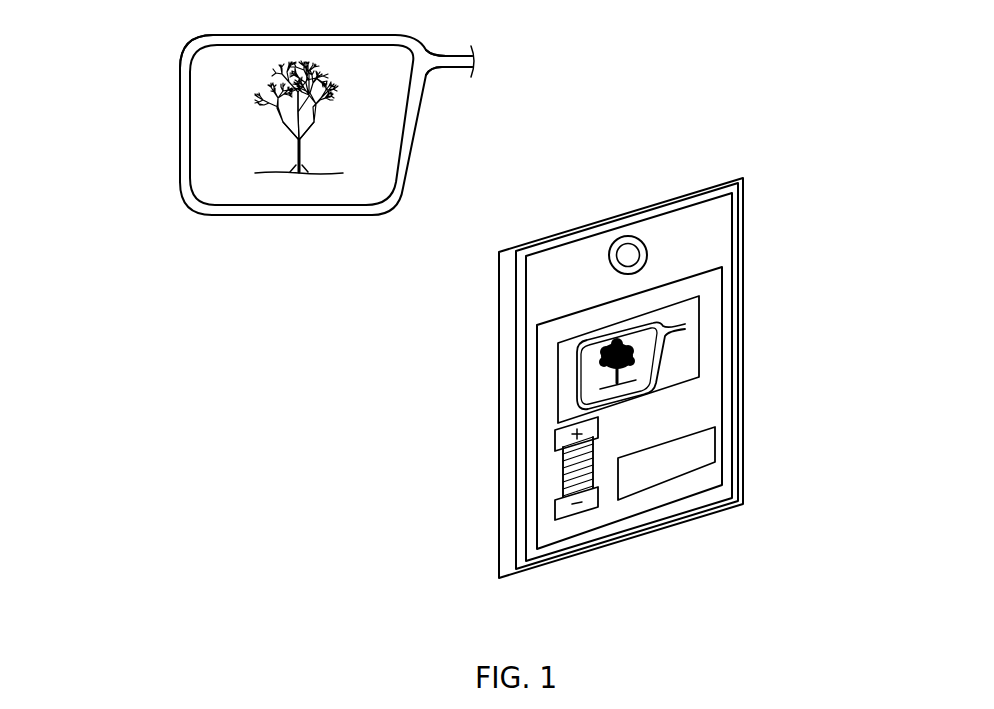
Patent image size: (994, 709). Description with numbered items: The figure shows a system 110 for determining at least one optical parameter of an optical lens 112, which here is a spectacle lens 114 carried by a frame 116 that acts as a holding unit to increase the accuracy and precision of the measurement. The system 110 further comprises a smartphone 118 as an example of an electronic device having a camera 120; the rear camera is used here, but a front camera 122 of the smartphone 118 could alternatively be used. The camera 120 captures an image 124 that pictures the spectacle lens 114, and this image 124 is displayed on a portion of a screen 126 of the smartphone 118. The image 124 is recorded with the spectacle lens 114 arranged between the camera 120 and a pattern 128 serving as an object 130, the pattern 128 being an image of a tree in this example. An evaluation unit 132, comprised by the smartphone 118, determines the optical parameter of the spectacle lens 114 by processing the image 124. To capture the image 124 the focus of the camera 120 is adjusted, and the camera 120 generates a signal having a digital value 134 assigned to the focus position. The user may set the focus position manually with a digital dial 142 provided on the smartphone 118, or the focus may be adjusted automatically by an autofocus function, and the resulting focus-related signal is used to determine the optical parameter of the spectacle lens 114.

The system 110 is at (817, 152).
The optical lens 112 is at (226, 211).
The spectacle lens 114 is at (287, 108).
The frame 116 is at (300, 212).
The smartphone 118 is at (508, 405).
The camera 120 is at (597, 201).
The front camera 122 is at (640, 252).
The image 124 is at (687, 350).
The screen 126 is at (693, 402).
The pattern 128 is at (230, 103).
The object 130 is at (298, 116).
The evaluation unit 132 is at (588, 502).
The digital value 134 is at (690, 465).
The dial 142 is at (578, 467).